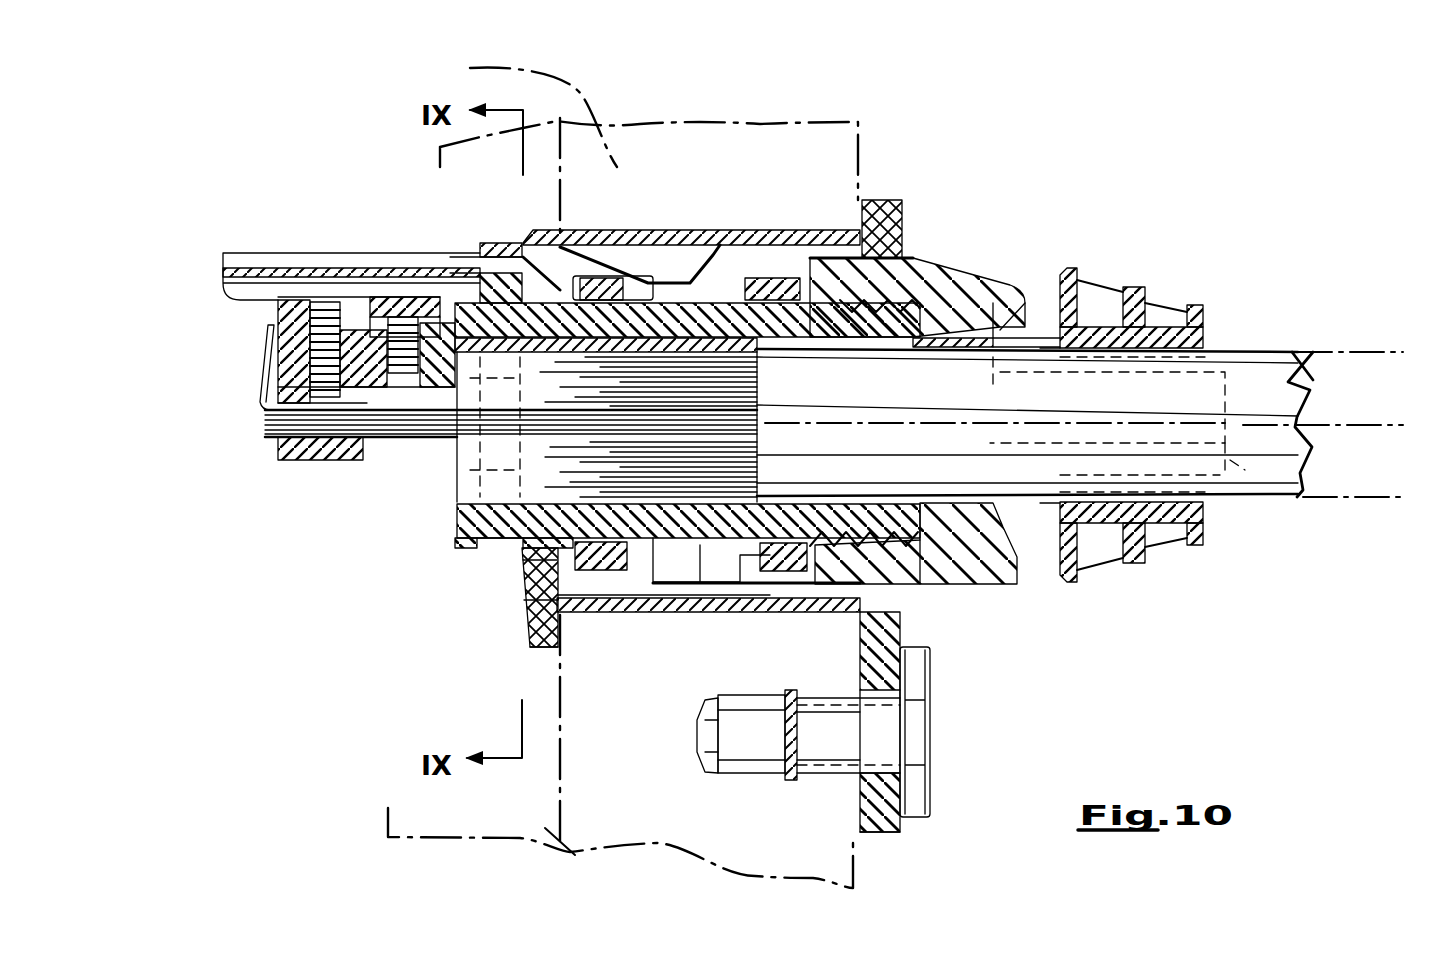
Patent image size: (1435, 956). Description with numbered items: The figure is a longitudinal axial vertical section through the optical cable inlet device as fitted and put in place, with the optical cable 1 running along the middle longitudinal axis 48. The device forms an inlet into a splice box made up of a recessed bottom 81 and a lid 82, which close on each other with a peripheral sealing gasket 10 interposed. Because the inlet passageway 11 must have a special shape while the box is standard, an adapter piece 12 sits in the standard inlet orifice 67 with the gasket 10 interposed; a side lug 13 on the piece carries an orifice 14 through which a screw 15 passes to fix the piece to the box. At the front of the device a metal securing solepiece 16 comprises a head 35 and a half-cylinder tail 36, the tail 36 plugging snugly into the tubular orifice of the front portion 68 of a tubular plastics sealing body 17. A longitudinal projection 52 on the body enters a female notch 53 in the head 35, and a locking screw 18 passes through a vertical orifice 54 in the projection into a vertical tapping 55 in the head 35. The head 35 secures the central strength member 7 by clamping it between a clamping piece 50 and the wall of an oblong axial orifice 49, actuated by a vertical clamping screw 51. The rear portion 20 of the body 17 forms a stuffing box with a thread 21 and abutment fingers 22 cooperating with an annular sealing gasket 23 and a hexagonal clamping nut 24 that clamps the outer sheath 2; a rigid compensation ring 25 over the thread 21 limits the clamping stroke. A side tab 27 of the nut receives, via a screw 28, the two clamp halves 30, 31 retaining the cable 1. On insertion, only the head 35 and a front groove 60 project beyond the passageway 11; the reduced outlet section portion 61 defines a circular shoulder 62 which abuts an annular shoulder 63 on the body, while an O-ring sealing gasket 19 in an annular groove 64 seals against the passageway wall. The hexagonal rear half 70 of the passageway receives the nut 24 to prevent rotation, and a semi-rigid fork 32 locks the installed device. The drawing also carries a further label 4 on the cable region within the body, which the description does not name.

The optical cable 1 is at (1262, 313).
The outer sheath 2 is at (1313, 352).
The housing body 4 is at (712, 385).
The central strength member 7 is at (262, 440).
The peripheral sealing gasket 10 is at (798, 230).
The inlet passageway 11 is at (715, 568).
The adapter piece 12 is at (900, 846).
The side lug 13 is at (900, 822).
The orifice 14 is at (880, 688).
The screw 15 is at (880, 745).
The securing solepiece 16 is at (445, 390).
The sealing body 17 is at (762, 455).
The locking screw 18 is at (395, 290).
The O-ring sealing gasket 19 is at (596, 575).
The rear portion 20 is at (917, 290).
The thread 21 is at (895, 215).
The abutment fingers 22 is at (967, 330).
The annular sealing gasket 23 is at (953, 493).
The clamping nut 24 is at (957, 560).
The compensation ring 25 is at (790, 565).
The side tab 27 is at (1245, 452).
The screw 28 is at (1232, 440).
The clamp half 30 is at (1128, 285).
The clamp half 31 is at (1133, 565).
The semi-rigid fork 32 is at (255, 262).
The head 35 is at (268, 340).
The tail 36 is at (533, 347).
The middle longitudinal axis 48 is at (1385, 427).
The axial orifice 49 is at (282, 393).
The clamping piece 50 is at (262, 396).
The vertical clamping screw 51 is at (277, 333).
The longitudinal projection 52 is at (348, 268).
The female notch 53 is at (378, 292).
The vertical orifice 54 is at (477, 275).
The vertical tapping 55 is at (435, 395).
The front groove 60 is at (525, 565).
The reduced outlet section portion 61 is at (525, 590).
The circular shoulder 62 is at (527, 620).
The annular shoulder 63 is at (588, 230).
The annular groove 64 is at (530, 645).
The standard inlet orifice 67 is at (700, 660).
The front portion 68 is at (523, 575).
The rear half of the inlet passageway 70 is at (878, 192).
The recessed bottom 81 is at (520, 852).
The lid 82 is at (636, 143).